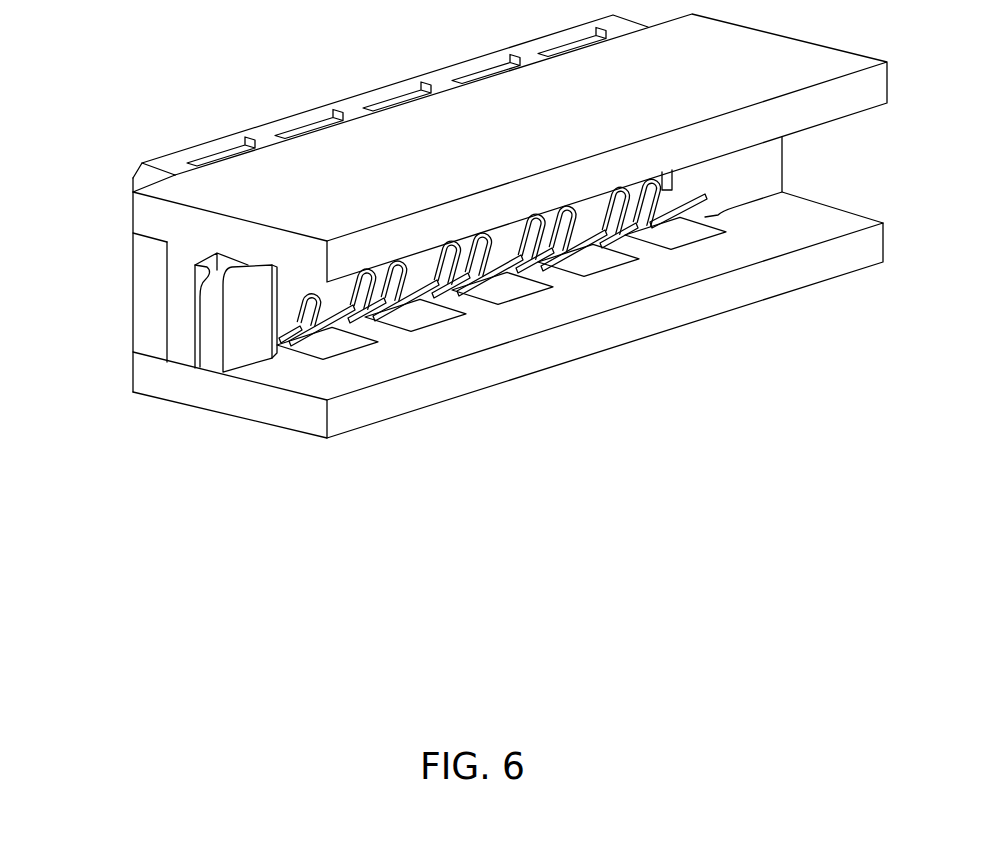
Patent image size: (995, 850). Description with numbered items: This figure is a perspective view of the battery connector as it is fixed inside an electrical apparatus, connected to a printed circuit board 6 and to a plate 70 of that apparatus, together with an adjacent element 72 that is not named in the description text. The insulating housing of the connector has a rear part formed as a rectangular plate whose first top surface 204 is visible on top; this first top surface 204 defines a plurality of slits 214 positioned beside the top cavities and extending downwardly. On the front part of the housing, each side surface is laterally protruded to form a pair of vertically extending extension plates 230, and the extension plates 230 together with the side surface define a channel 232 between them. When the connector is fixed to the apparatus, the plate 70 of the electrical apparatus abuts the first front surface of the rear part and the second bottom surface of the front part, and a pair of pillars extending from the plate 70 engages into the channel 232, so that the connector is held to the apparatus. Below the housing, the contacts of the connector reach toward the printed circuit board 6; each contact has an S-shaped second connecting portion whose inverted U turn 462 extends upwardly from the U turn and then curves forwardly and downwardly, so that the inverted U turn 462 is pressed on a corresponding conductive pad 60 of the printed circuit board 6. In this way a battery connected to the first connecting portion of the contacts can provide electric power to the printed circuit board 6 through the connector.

The printed circuit board 6 is at (400, 395).
The conductive pad 60 is at (320, 342).
The plate 70 is at (175, 219).
The side wall 72 is at (180, 290).
The first top surface 204 is at (163, 163).
The slits 214 is at (287, 132).
The extension plates 230 is at (148, 337).
The channel 232 is at (177, 360).
The inverted U turn 462 is at (310, 332).